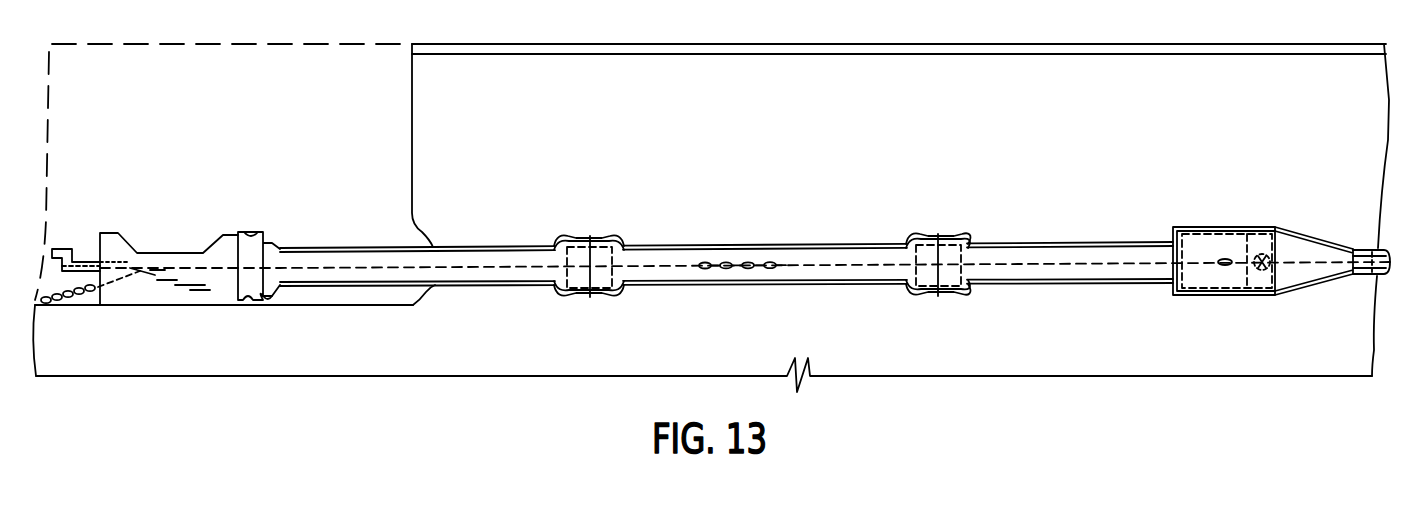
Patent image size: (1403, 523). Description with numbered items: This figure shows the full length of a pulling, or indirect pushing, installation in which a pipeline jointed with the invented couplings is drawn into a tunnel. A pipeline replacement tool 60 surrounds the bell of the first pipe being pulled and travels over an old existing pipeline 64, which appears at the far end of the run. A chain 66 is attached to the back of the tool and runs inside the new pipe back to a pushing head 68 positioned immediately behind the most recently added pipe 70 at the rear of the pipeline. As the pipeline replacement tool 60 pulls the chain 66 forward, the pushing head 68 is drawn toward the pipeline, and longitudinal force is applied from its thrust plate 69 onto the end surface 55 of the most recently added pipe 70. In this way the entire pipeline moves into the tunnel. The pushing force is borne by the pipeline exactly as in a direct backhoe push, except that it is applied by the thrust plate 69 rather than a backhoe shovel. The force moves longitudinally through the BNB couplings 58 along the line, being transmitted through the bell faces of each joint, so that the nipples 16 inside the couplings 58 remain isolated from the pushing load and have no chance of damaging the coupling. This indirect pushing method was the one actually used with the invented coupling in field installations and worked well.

The nipple 16 is at (593, 236).
The end surface of the most recent pipe 55 is at (272, 296).
The BNB coupling 58 is at (938, 236).
The pipeline replacement tool 60 is at (1293, 227).
The old existing pipeline 64 is at (1372, 250).
The chain 66 is at (1068, 263).
The pushing head 68 is at (175, 252).
The thrust plate 69 is at (231, 300).
The most recently added pipe 70 is at (370, 247).